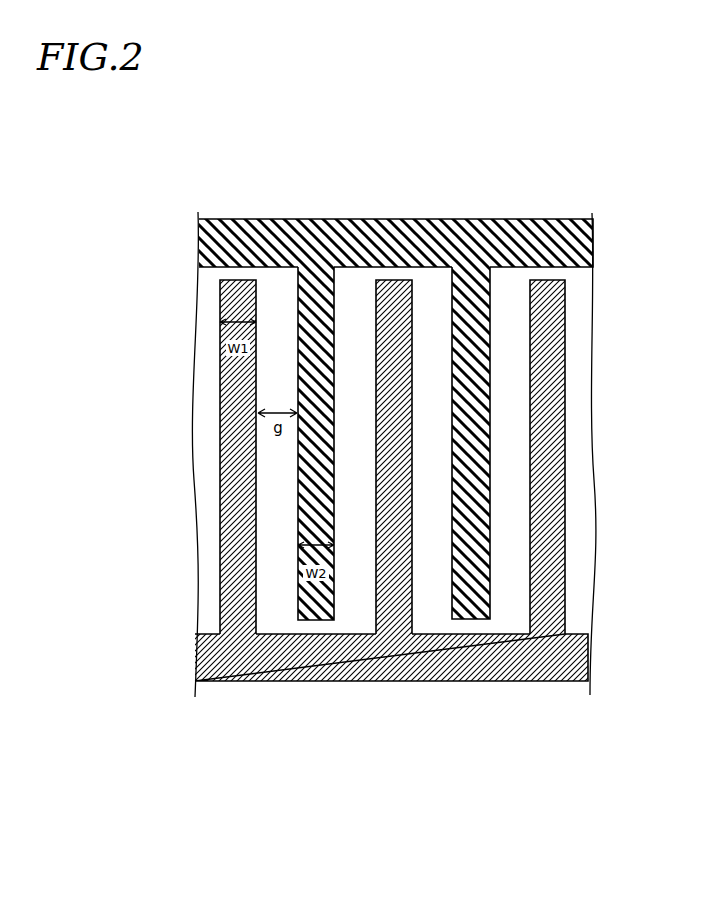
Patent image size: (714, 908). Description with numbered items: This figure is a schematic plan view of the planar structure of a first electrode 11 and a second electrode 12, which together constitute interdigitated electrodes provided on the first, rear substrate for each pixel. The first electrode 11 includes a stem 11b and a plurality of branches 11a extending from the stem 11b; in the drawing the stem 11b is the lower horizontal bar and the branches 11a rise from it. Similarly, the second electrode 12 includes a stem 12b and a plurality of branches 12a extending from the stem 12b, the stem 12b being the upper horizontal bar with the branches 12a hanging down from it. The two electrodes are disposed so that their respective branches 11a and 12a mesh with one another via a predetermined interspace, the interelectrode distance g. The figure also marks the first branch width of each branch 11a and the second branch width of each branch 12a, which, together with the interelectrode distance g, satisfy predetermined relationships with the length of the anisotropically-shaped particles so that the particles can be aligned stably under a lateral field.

The first electrode 11 is at (391, 546).
The branches of the first electrode 11a is at (241, 527).
The stem of the first electrode 11b is at (318, 660).
The second electrode 12 is at (396, 361).
The branches of the second electrode 12a is at (318, 385).
The stem of the second electrode 12b is at (383, 238).